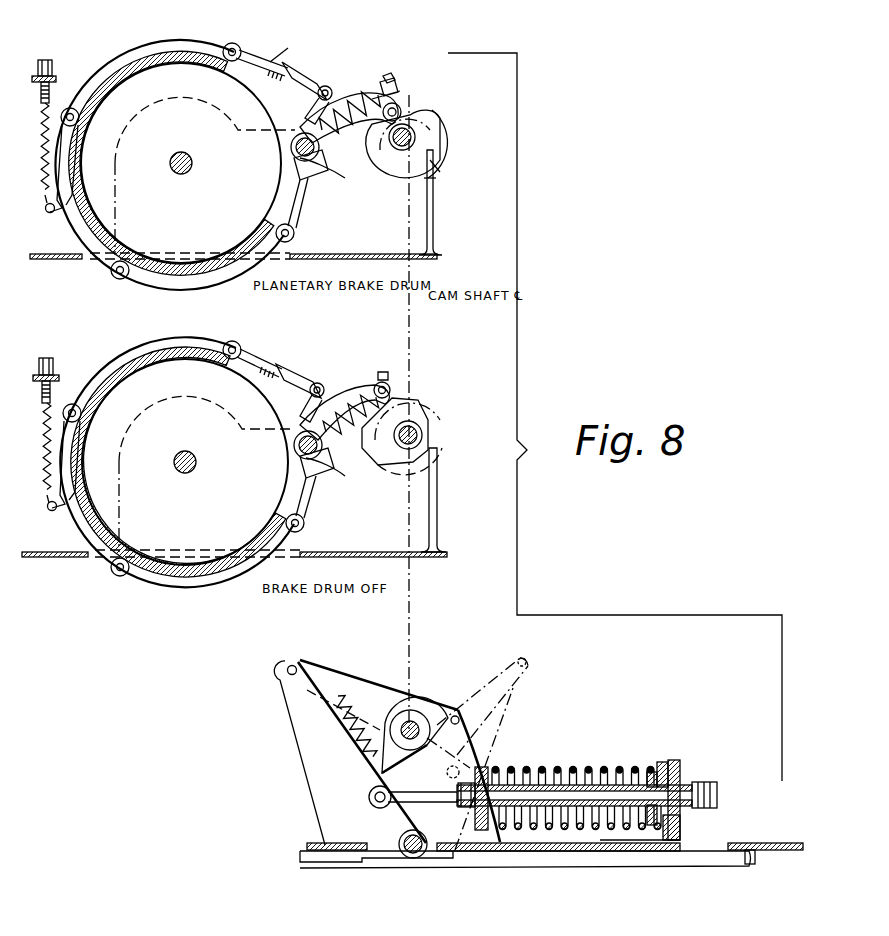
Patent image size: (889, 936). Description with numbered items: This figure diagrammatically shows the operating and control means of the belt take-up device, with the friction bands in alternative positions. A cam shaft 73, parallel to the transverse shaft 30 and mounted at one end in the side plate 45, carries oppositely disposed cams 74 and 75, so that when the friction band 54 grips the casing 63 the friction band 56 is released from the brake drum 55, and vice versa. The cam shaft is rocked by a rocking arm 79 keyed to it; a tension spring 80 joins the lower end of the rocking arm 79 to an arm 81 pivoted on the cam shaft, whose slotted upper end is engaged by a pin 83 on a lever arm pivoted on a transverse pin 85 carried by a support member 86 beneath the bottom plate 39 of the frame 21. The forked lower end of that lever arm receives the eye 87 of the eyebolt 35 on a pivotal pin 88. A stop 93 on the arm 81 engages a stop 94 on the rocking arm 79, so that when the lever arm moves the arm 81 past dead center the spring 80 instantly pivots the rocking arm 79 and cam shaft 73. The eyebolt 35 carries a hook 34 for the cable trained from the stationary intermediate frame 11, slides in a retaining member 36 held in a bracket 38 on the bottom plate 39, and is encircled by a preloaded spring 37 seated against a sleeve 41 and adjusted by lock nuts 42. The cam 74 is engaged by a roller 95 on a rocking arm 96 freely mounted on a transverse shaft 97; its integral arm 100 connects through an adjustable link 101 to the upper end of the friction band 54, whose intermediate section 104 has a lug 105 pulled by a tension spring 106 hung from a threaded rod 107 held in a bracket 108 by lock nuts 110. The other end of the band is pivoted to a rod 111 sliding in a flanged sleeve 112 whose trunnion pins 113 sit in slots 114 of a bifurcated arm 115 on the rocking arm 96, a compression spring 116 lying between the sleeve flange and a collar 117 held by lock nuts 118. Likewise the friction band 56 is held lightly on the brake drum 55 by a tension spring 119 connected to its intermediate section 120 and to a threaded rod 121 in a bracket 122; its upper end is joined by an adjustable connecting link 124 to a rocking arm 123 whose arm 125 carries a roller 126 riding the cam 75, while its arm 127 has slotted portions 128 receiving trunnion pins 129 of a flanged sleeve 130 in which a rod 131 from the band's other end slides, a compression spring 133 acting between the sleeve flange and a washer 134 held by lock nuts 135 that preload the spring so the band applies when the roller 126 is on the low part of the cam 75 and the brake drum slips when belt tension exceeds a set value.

The intermediate frame 11 is at (752, 860).
The frame 21 is at (58, 260).
The transverse shaft 30 is at (180, 176).
The hook 34 is at (712, 786).
The eyebolt 35 is at (670, 787).
The retaining member 36 is at (666, 762).
The preloaded spring 37 is at (575, 765).
The bracket 38 is at (578, 866).
The bottom plate 39 is at (372, 259).
The sleeve 41 is at (548, 766).
The lock nuts 42 is at (468, 810).
The side plate 45 is at (438, 218).
The friction band 54 is at (150, 42).
The brake drum 55 is at (290, 50).
The friction band 56 is at (163, 347).
The casing 63 is at (265, 92).
The cam shaft 73 is at (440, 137).
The cam 74 is at (422, 115).
The cam 75 is at (412, 392).
The rocking arm 79 is at (370, 796).
The tension spring 80 is at (370, 703).
The arm 81 is at (338, 685).
The pin 83 is at (286, 671).
The transverse pin 85 is at (413, 858).
The support member 86 is at (380, 858).
The eye 87 is at (360, 822).
The pivotal pin 88 is at (390, 803).
The stop 93 is at (400, 703).
The stop 94 is at (408, 750).
The roller 95 is at (405, 106).
The rocking arm 96 is at (342, 102).
The transverse shaft 97 is at (295, 152).
The arm 100 is at (298, 76).
The adjustable link 101 is at (247, 60).
The intermediate section 104 is at (58, 215).
The lug 105 is at (48, 210).
The tension spring 106 is at (45, 182).
The threaded rod 107 is at (72, 108).
The bracket 108 is at (58, 78).
The lock nuts 110 is at (45, 56).
The rod 111 is at (310, 200).
The flanged sleeve 112 is at (345, 158).
The trunnion pins 113 is at (345, 180).
The slots 114 is at (434, 196).
The bifurcated arm 115 is at (302, 172).
The compression spring 116 is at (442, 170).
The collar 117 is at (385, 80).
The lock nuts 118 is at (400, 88).
The tension spring 119 is at (46, 480).
The intermediate section 120 is at (85, 522).
The threaded rod 121 is at (44, 402).
The bracket 122 is at (58, 388).
The rocking arm 123 is at (298, 377).
The adjustable connecting link 124 is at (238, 356).
The arm 125 is at (345, 392).
The roller 126 is at (400, 378).
The arm 127 is at (330, 482).
The slotted portions 128 is at (345, 458).
The trunnion pins 129 is at (345, 476).
The flanged sleeve 130 is at (440, 476).
The rod 131 is at (318, 522).
The compression spring 133 is at (420, 412).
The washer 134 is at (356, 364).
The lock nuts 135 is at (380, 383).